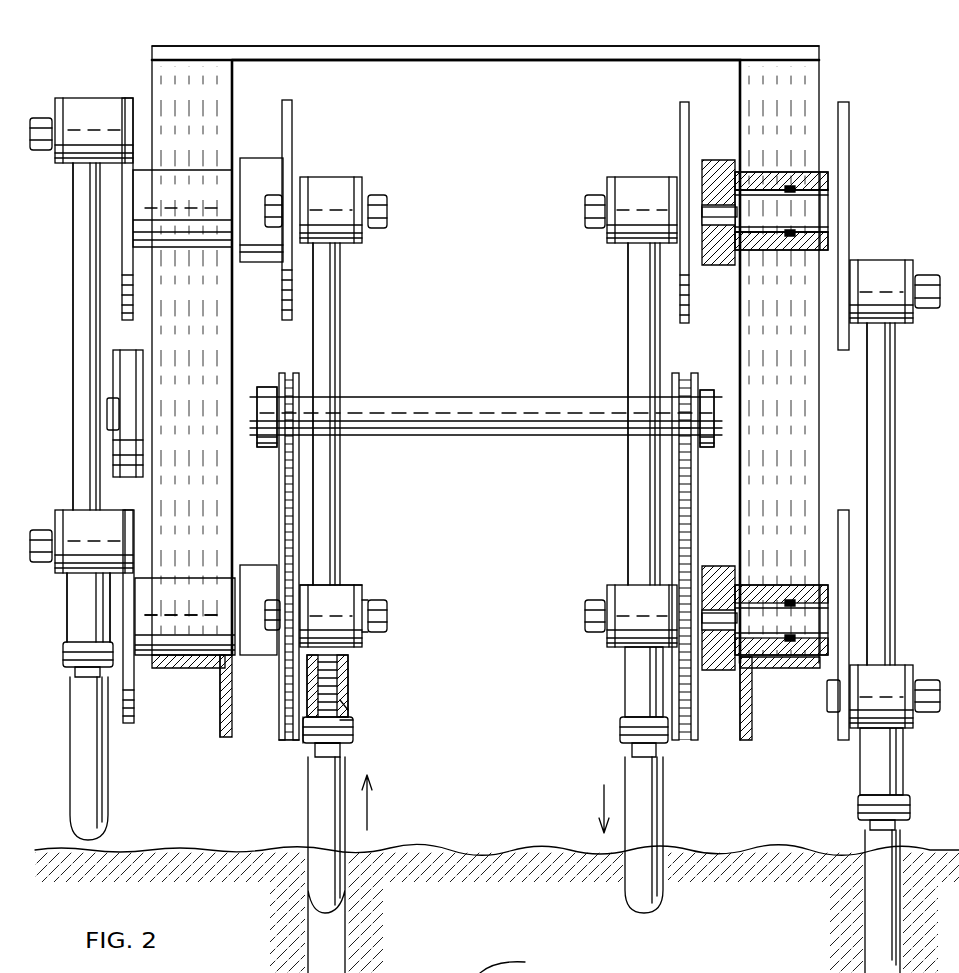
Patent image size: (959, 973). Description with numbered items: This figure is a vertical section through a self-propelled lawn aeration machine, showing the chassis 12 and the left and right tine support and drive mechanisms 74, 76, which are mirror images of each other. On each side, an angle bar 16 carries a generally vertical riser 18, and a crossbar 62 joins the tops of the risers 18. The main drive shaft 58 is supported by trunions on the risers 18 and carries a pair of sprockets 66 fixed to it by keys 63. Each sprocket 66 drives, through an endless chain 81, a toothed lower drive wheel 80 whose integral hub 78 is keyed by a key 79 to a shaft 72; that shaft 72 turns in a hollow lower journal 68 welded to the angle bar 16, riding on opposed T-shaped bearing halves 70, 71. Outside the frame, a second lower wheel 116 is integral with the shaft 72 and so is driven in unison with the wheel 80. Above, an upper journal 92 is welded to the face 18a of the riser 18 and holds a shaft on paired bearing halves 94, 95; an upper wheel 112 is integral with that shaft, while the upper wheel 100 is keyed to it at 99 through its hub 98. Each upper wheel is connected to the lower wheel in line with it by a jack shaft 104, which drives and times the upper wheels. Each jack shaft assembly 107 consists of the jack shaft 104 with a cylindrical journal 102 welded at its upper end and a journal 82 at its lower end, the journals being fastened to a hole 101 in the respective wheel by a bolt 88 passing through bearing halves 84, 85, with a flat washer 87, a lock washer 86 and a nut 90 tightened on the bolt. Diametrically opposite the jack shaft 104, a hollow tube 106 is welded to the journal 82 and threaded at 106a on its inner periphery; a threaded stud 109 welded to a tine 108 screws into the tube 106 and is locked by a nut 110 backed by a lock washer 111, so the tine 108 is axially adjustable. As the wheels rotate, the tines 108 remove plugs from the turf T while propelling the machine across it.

The wheeled frame or chassis 12 is at (214, 730).
The angle bar 16 is at (190, 672).
The riser 18 is at (240, 505).
The face of riser 18a is at (224, 95).
The main drive shaft 58 is at (414, 400).
The crossbar 62 is at (455, 62).
The key 63 is at (252, 412).
The sprocket 66 is at (266, 390).
The lower journal 68 is at (185, 578).
The bearing half 70 is at (745, 582).
The bearing half 71 is at (832, 605).
The shaft 72 is at (740, 682).
The left tine support and drive mechanism 74 is at (366, 345).
The right tine support and drive mechanism 76 is at (609, 329).
The hub 78 is at (250, 582).
The key 79 is at (725, 618).
The drive wheel 80 is at (290, 672).
The endless chain 81 is at (300, 510).
The journal 82 is at (85, 560).
The bearing half 84 is at (290, 634).
The bearing half 85 is at (345, 640).
The lock washer 86 is at (387, 606).
The flat washer 87 is at (362, 588).
The bolt 88 is at (270, 612).
The nut 90 is at (387, 620).
The upper journal 92 is at (192, 170).
The bearing half 94 is at (742, 172).
The bearing half 95 is at (832, 240).
The hub 98 is at (705, 165).
The key 99 is at (722, 215).
The upper wheel 100 is at (292, 145).
The hole 101 is at (524, 963).
The journal 102 is at (105, 84).
The jack shaft 104 is at (73, 464).
The tube 106 is at (80, 610).
The threads 106a is at (353, 712).
The jack shaft assembly 107 is at (72, 350).
The tine 108 is at (100, 792).
The threaded stud 109 is at (303, 742).
The nut 110 is at (353, 742).
The lock washer 111 is at (353, 722).
The upper wheel 112 is at (122, 290).
The lower wheel 116 is at (128, 725).
The turf T is at (390, 850).